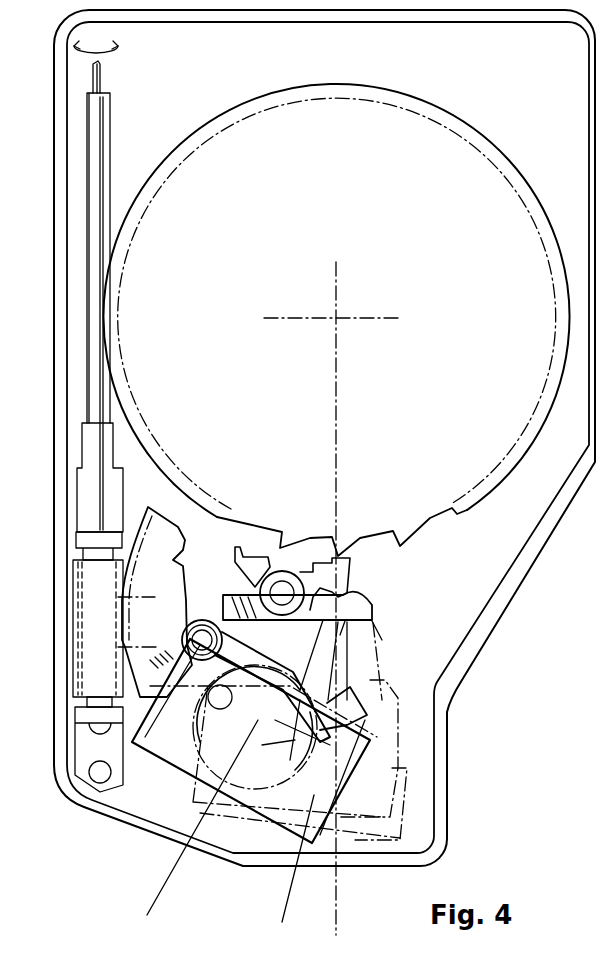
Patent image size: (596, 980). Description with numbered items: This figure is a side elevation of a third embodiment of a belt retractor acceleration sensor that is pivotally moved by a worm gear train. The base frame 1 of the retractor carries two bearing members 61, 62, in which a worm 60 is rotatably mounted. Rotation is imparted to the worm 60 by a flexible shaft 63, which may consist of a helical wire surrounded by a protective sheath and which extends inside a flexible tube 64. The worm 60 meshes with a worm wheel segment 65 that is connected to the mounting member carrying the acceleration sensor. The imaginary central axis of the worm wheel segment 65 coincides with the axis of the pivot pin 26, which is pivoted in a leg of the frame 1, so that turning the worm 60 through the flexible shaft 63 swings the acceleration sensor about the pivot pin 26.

The base frame 1 is at (55, 298).
The pivot pin 26 is at (373, 630).
The worm 60 is at (90, 618).
The bearing member 61 is at (87, 540).
The bearing member 62 is at (83, 708).
The flexible shaft 63 is at (95, 79).
The flexible tube 64 is at (96, 176).
The worm wheel segment 65 is at (153, 555).